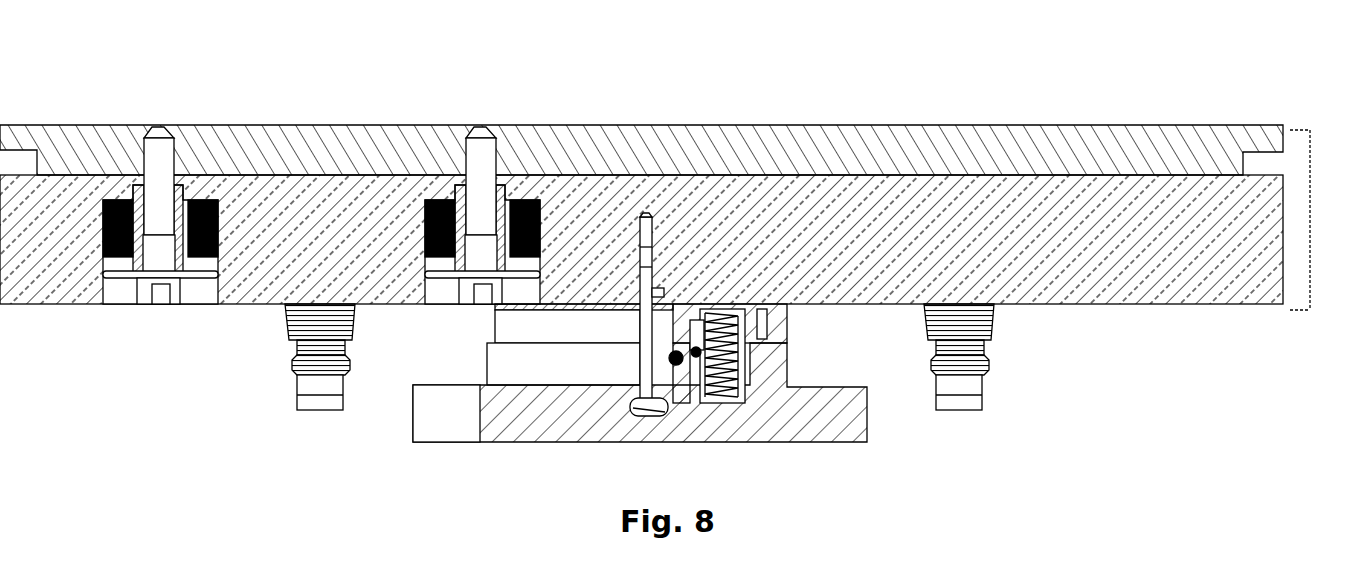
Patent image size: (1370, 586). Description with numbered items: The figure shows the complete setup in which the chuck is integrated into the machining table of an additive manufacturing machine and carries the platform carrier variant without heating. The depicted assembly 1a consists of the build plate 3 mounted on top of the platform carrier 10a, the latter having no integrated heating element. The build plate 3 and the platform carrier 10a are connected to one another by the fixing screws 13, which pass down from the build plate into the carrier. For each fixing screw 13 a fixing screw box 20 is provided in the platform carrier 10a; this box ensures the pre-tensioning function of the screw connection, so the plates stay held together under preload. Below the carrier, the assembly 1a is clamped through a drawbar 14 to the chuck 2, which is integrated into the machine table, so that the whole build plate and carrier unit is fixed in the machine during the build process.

The assembly having platform carrier without integrated heating element 1a is at (1310, 218).
The chuck 2 is at (860, 420).
The build plate 3 is at (663, 153).
The platform carrier without integrated heating element 10a is at (823, 193).
The fixing screw 13 is at (500, 167).
The drawbar 14 is at (985, 368).
The fixing screw box 20 is at (224, 212).